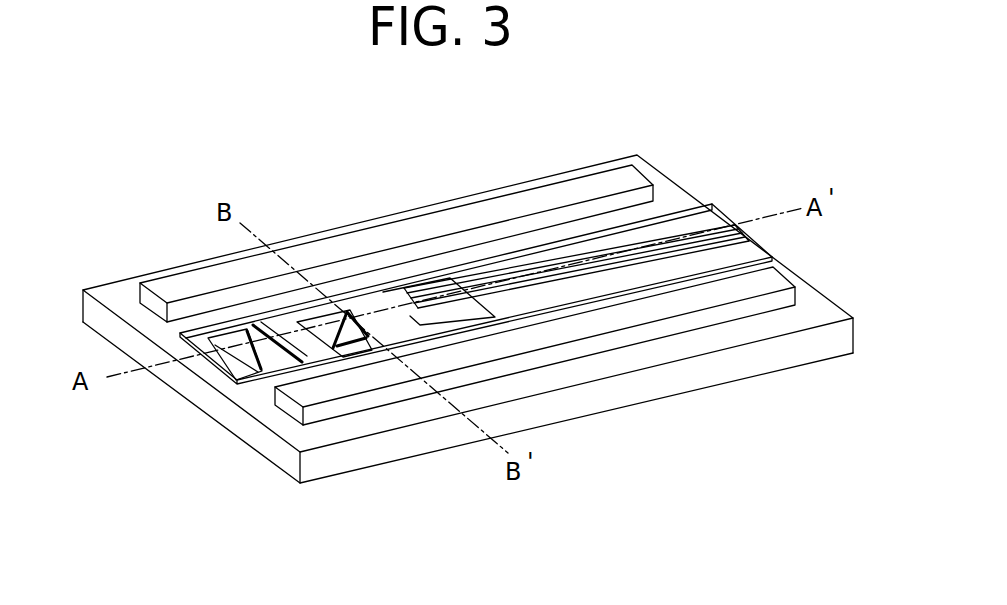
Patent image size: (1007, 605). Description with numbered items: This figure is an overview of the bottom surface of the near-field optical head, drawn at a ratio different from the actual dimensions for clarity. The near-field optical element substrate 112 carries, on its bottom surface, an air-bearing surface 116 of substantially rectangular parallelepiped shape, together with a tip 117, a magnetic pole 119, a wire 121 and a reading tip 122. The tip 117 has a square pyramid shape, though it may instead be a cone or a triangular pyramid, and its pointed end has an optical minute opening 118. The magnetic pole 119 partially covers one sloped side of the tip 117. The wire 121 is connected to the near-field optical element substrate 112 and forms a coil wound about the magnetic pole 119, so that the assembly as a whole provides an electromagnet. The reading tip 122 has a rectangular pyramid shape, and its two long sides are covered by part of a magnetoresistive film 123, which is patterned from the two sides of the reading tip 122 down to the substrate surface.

The near-field optical element substrate 112 is at (568, 410).
The air-bearing surface 116 is at (540, 197).
The tip 117 is at (320, 327).
The optical minute opening 118 is at (342, 315).
The magnetic pole 119 is at (403, 337).
The wire 121 is at (657, 244).
The reading tip 122 is at (247, 352).
The magnetoresistive film 123 is at (180, 334).